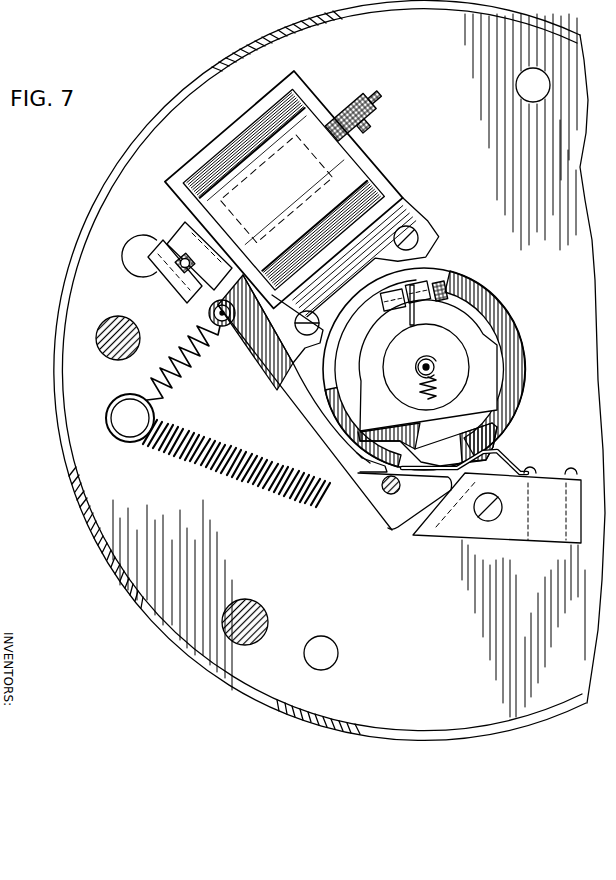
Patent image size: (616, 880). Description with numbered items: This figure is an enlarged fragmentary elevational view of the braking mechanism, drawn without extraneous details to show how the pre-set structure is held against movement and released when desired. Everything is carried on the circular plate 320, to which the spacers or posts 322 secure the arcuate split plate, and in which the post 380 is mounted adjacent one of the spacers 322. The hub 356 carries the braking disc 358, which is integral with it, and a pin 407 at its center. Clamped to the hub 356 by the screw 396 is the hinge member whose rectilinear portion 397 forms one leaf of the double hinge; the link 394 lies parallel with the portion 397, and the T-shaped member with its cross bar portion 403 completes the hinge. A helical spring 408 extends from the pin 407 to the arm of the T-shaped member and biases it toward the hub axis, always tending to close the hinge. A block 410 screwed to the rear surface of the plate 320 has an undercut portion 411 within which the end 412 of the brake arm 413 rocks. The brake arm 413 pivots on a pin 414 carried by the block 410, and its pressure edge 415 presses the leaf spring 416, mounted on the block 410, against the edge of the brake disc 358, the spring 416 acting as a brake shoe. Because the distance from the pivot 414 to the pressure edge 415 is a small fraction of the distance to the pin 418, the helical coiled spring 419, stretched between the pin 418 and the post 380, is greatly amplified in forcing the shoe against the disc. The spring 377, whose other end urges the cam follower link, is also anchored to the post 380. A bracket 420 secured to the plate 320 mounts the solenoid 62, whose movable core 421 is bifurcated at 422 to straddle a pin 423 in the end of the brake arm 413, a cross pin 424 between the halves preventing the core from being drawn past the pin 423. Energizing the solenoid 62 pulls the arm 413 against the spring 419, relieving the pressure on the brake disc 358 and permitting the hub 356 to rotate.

The solenoid 62 is at (246, 125).
The circular plate 320 is at (403, 593).
The spacers or posts 322 is at (95, 338).
The hub 356 is at (437, 333).
The braking disc 358 is at (477, 290).
The spring 377 is at (237, 480).
The post 380 is at (130, 435).
The link 394 is at (474, 424).
The screw 396 is at (465, 277).
The rectilinear portion 397 is at (468, 400).
The cross bar portion 403 is at (463, 443).
The pin 407 is at (437, 360).
The helical spring 408 is at (443, 378).
The block 410 is at (551, 534).
The undercut portion 411 is at (440, 533).
The end of the brake arm 412 is at (390, 517).
The brake arm 413 is at (290, 405).
The pin 414 is at (380, 487).
The pressure edge 415 is at (360, 461).
The leaf spring 416 is at (500, 455).
The pin 418 is at (208, 313).
The helical coiled spring 419 is at (187, 373).
The bracket 420 is at (368, 269).
The movable core 421 is at (192, 227).
The bifurcation 422 is at (193, 240).
The pin 423 is at (173, 273).
The cross pin 424 is at (158, 247).